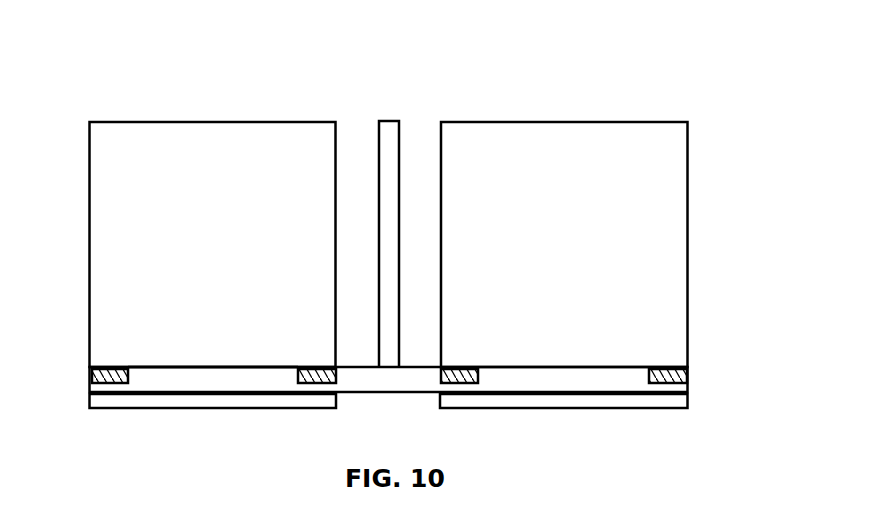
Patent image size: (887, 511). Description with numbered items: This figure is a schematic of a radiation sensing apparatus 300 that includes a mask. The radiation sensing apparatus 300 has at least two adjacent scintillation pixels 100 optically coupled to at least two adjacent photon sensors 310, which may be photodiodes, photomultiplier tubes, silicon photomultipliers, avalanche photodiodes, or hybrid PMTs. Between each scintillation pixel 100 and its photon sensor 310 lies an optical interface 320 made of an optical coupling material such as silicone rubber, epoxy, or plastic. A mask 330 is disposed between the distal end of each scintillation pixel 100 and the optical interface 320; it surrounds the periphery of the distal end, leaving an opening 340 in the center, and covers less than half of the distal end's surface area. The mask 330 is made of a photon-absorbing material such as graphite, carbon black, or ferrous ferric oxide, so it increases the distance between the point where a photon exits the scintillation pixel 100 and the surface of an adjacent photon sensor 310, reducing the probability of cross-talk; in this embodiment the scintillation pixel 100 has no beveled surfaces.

The radiation sensing apparatus 300 is at (677, 66).
The scintillation pixel 100 is at (510, 142).
The photon sensor 310 is at (610, 400).
The optical interface 320 is at (682, 388).
The mask 330 is at (686, 370).
The opening 340 is at (160, 372).